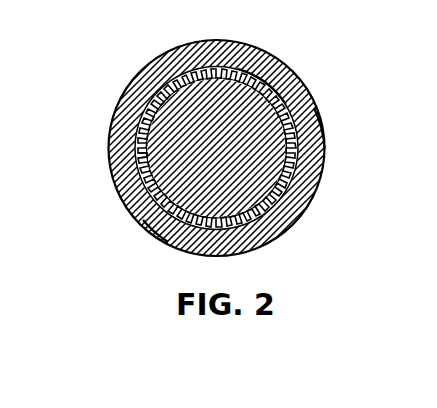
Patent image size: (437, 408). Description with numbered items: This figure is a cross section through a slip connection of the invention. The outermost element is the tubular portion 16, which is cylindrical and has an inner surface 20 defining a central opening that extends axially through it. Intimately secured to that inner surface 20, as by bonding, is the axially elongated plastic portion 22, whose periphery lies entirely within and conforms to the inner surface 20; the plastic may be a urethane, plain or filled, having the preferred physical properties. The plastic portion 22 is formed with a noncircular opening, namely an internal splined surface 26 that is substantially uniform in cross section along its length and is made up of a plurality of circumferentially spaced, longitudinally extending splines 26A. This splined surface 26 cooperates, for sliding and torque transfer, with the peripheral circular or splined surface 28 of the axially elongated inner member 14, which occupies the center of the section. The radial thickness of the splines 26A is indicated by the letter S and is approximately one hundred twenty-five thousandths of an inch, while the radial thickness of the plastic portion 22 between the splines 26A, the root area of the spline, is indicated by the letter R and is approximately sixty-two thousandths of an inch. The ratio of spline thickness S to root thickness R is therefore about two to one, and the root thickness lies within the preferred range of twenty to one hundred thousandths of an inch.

The inner member 14 is at (218, 148).
The tubular portion 16 is at (244, 52).
The inner surface 20 is at (284, 88).
The plastic portion 22 is at (307, 125).
The internal splined surface 26 is at (277, 167).
The splines 26A is at (128, 153).
The peripheral surface 28 is at (148, 227).
The root thickness R is at (197, 92).
The spline thickness S is at (170, 116).